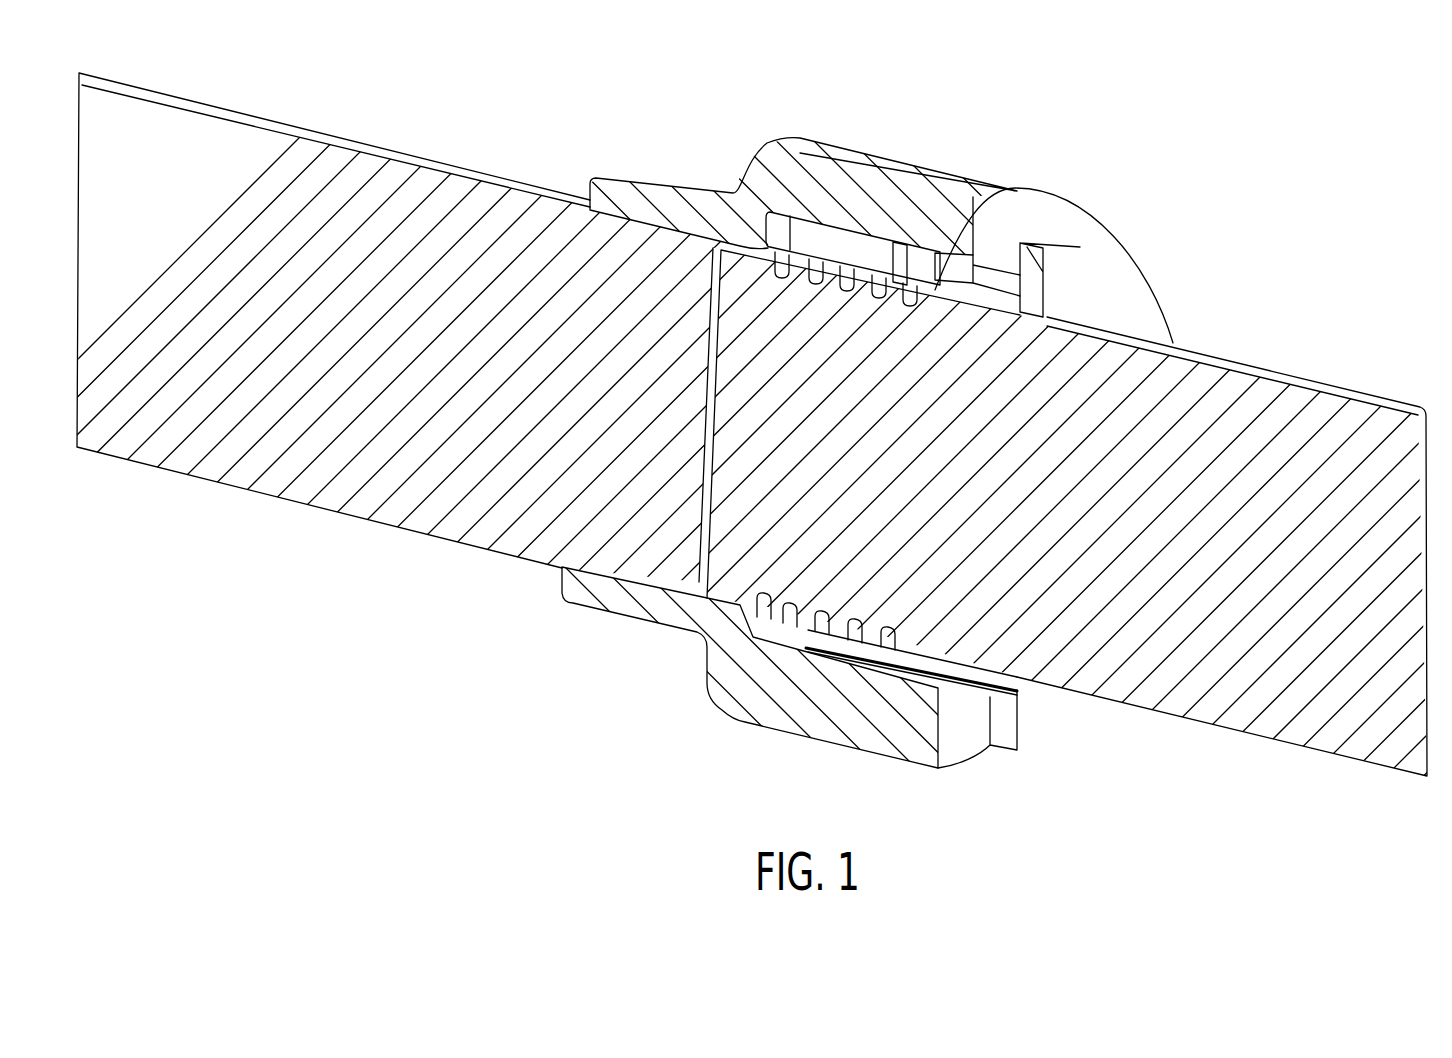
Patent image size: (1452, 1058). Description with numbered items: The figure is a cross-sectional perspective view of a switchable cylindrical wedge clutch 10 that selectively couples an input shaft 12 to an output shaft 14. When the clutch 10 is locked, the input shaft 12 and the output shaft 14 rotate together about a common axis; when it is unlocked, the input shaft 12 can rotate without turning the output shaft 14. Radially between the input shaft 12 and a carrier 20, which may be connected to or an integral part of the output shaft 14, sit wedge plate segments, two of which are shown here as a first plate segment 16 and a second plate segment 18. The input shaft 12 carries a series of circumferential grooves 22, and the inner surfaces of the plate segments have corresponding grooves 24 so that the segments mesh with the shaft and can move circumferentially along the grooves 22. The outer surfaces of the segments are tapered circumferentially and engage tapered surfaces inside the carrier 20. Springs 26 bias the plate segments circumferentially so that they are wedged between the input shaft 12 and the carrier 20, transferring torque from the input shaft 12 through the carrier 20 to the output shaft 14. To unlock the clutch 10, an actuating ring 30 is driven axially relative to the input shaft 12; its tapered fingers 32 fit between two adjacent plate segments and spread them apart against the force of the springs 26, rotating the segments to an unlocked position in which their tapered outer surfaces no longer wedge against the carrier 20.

The switchable cylindrical wedge clutch 10 is at (658, 137).
The input shaft 12 is at (1295, 735).
The output shaft 14 is at (300, 490).
The first plate segment 16 is at (922, 262).
The second plate segment 18 is at (780, 630).
The carrier 20 is at (920, 190).
The circumferential grooves 22 is at (860, 663).
The grooves 24 is at (955, 275).
The springs 26 is at (845, 245).
The actuating ring 30 is at (1100, 268).
The tapered fingers 32 is at (828, 645).